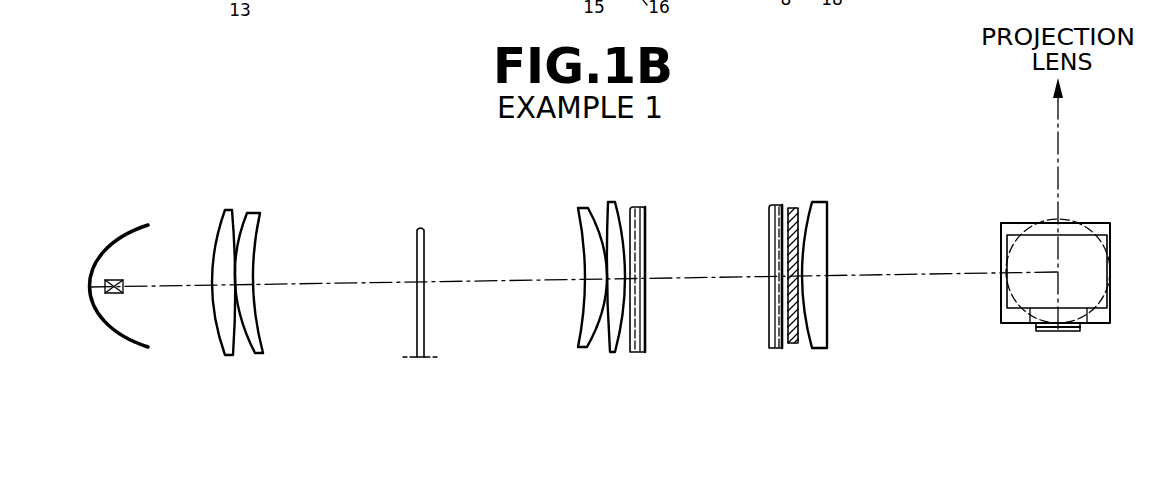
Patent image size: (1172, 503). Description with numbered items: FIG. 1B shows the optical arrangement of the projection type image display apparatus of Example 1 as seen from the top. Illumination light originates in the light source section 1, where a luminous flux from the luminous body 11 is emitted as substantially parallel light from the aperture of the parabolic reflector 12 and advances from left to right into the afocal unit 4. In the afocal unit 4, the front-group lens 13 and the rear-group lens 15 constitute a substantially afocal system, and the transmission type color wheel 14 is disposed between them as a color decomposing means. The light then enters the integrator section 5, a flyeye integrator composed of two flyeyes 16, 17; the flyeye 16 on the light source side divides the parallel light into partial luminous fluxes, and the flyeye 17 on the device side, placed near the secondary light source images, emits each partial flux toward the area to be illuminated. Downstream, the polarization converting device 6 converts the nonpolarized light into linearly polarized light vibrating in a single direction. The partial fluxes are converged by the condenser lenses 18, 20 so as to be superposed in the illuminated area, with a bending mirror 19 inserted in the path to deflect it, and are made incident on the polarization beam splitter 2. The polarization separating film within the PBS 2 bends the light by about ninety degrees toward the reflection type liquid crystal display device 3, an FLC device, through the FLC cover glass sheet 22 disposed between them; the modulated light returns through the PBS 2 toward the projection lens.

The light source section 1 is at (130, 215).
The luminous body 11 is at (124, 292).
The parabolic reflector 12 is at (137, 231).
The front-group lens 13 is at (217, 360).
The transmission type color wheel 14 is at (417, 325).
The rear-group lens 15 is at (573, 360).
The flyeye 16 is at (642, 353).
The flyeye 17 is at (769, 336).
The condenser lens 18 is at (817, 205).
The afocal unit 4 is at (212, 192).
The integrator section 5 is at (637, 192).
The polarization converting device 6 is at (792, 208).
The bending mirror 19 is at (1002, 236).
The condenser lens 20 is at (1022, 231).
The polarization beam splitter 2 is at (1078, 248).
The FLC cover glass sheet 22 is at (1030, 327).
The reflection type liquid crystal display device 3 is at (1076, 331).